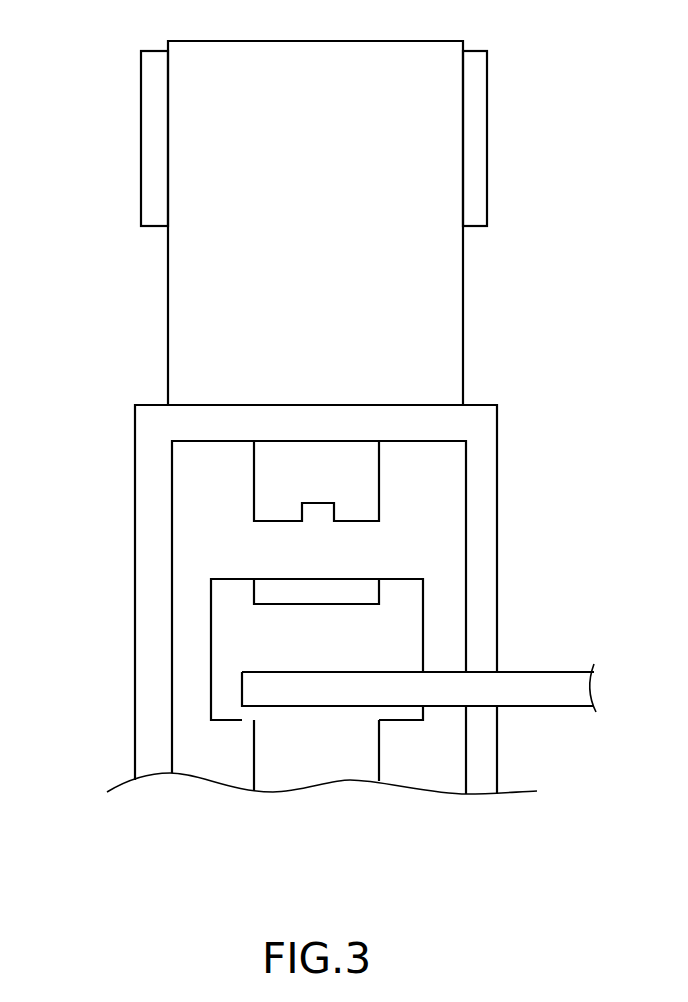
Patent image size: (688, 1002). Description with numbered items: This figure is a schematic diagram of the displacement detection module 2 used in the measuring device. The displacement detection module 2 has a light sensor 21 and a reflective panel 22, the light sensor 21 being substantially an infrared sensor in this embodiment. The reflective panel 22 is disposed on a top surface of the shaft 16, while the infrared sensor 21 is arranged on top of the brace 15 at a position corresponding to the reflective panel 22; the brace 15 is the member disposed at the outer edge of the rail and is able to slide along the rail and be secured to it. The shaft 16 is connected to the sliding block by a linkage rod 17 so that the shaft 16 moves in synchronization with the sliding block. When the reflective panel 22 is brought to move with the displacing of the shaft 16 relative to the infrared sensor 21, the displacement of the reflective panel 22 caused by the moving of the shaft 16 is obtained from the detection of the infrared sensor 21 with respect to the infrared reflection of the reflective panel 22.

The displacement detection module 2 is at (147, 311).
The brace 15 is at (155, 447).
The shaft 16 is at (273, 750).
The linkage rod 17 is at (375, 690).
The light sensor 21 is at (269, 477).
The reflective panel 22 is at (292, 590).